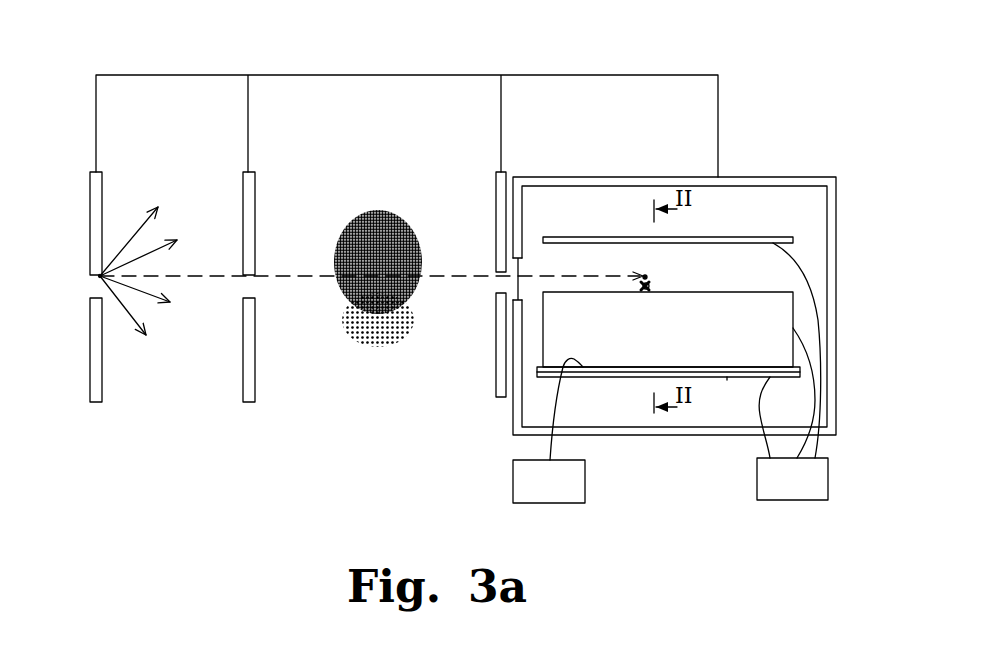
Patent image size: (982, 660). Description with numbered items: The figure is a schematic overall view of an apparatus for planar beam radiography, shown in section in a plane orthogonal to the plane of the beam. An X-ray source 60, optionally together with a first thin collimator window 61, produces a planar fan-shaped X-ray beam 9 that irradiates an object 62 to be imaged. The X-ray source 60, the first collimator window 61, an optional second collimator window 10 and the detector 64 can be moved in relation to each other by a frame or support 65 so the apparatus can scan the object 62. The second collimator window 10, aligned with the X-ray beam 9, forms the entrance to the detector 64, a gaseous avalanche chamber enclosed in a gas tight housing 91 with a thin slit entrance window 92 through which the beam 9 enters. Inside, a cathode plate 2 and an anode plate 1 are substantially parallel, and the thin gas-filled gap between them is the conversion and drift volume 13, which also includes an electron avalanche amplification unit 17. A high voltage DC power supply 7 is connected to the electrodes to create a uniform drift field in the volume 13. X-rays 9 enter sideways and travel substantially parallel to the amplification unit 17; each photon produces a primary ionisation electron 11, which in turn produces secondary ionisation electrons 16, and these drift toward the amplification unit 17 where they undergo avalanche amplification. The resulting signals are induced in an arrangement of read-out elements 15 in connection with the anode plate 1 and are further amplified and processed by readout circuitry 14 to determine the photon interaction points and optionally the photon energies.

The frame or support 65 is at (153, 75).
The X-ray source 60 is at (97, 280).
The planar fan-shaped X-ray beam 9 is at (182, 276).
The first thin collimator window 61 is at (262, 270).
The object 62 is at (388, 345).
The second collimator window 10 is at (498, 283).
The gas tight housing 91 is at (732, 180).
The slit entrance window 92 is at (520, 268).
The cathode plate 2 is at (773, 237).
The primary ionisation electron 11 is at (644, 276).
The secondary ionisation electrons 16 is at (650, 284).
The electron avalanche amplification unit 17 is at (778, 323).
The anode plate 1 is at (543, 377).
The readout circuitry 14 is at (549, 430).
The conversion and drift volume 13 is at (718, 273).
The arrangement of read-out elements 15 is at (727, 368).
The high voltage DC power supply 7 is at (792, 371).
The detector 64 is at (688, 462).